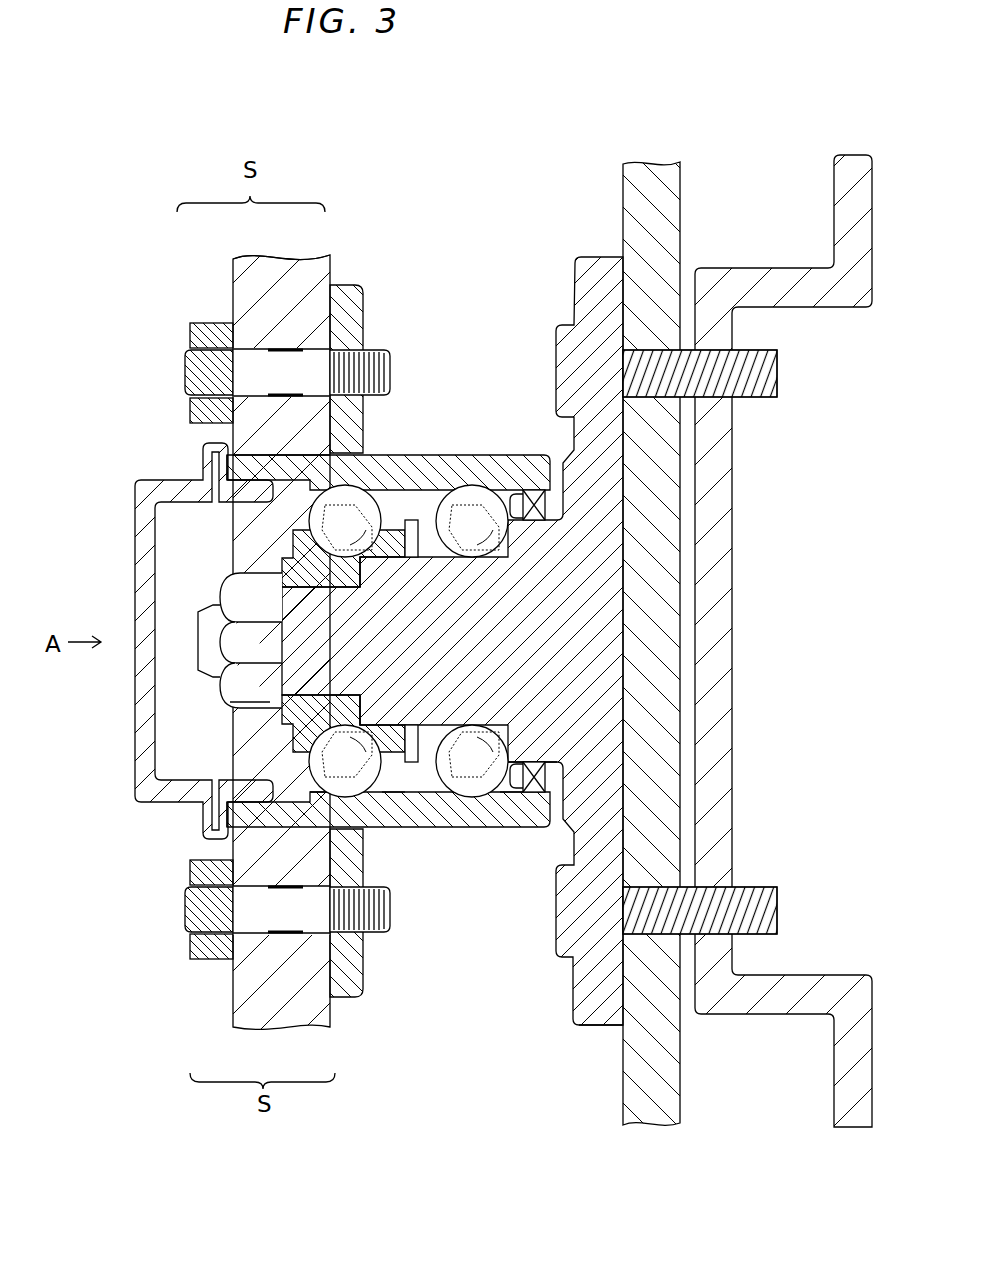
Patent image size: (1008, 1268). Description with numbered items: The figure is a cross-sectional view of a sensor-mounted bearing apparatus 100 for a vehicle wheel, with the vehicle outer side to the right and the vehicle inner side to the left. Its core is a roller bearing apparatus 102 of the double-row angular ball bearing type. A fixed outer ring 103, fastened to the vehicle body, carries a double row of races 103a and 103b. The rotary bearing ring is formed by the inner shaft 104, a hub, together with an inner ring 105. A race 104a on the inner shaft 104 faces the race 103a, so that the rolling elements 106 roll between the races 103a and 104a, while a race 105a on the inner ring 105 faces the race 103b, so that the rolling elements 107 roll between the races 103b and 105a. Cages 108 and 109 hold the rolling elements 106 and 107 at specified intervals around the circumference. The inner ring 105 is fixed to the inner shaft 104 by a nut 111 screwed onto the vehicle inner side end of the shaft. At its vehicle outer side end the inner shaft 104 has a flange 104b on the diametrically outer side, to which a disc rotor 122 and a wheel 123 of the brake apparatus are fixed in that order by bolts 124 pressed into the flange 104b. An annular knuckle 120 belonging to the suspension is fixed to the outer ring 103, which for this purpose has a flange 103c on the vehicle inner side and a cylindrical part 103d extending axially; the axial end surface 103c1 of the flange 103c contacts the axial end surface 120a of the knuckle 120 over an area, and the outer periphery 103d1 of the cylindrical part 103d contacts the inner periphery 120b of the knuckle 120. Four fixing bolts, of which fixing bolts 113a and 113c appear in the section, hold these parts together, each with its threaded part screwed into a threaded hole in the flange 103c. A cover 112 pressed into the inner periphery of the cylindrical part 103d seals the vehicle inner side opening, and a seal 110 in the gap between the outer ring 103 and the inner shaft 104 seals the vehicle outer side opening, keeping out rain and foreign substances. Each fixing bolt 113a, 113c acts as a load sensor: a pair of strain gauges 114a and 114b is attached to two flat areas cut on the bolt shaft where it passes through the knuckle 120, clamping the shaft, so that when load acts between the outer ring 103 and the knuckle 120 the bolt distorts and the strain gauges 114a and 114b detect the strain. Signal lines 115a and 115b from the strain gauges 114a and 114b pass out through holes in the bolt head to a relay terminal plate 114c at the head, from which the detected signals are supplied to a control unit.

The wheel bearing assembly 100 is at (424, 342).
The roller bearing apparatus 102 is at (453, 449).
The outer ring 103 is at (455, 462).
The race 103a is at (505, 800).
The race 103b is at (352, 805).
The flange 103c is at (347, 998).
The axial end surface 103c1 is at (318, 298).
The cylindrical part 103d is at (213, 828).
The outer periphery 103d1 is at (212, 447).
The inner shaft 104 is at (485, 450).
The race 104a is at (535, 745).
The flange 104b is at (605, 1030).
The inner ring 105 is at (310, 555).
The race 105a is at (300, 738).
The rolling element 106 is at (530, 490).
The rolling element 107 is at (412, 593).
The cage 108 is at (452, 800).
The cage 109 is at (395, 800).
The seal 110 is at (528, 795).
The nut 111 is at (215, 603).
The cover 112 is at (157, 778).
The fixing bolt 113a is at (231, 642).
The fixing bolt 113c is at (200, 945).
The strain gauge 114a is at (278, 372).
The strain gauge 114b is at (258, 352).
The relay terminal plate 114c is at (185, 370).
The signal line 115a is at (215, 340).
The signal line 115b is at (185, 383).
The knuckle 120 is at (325, 1030).
The axial end surface 120a is at (330, 268).
The inner periphery 120b is at (305, 453).
The disc rotor 122 is at (660, 1100).
The wheel 123 is at (828, 992).
The bolt 124 is at (777, 372).